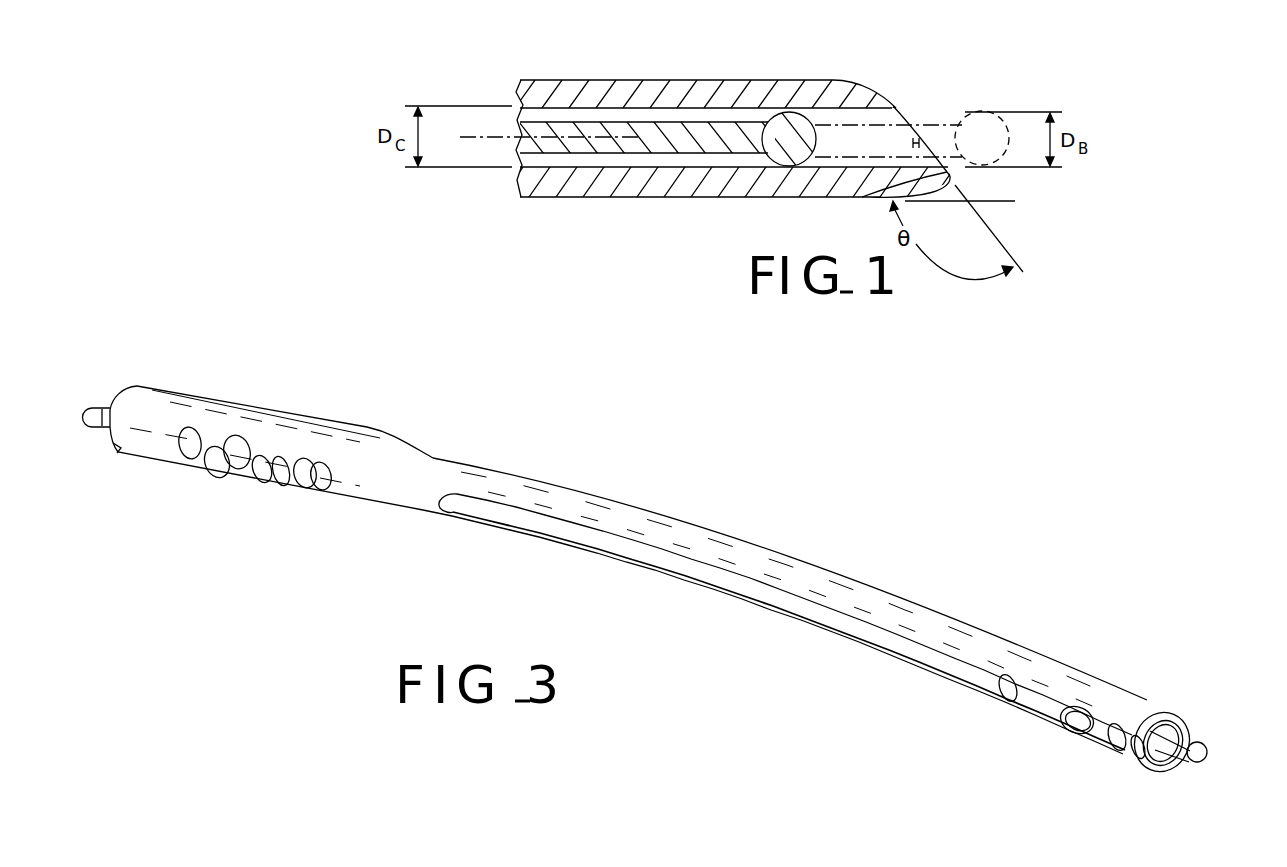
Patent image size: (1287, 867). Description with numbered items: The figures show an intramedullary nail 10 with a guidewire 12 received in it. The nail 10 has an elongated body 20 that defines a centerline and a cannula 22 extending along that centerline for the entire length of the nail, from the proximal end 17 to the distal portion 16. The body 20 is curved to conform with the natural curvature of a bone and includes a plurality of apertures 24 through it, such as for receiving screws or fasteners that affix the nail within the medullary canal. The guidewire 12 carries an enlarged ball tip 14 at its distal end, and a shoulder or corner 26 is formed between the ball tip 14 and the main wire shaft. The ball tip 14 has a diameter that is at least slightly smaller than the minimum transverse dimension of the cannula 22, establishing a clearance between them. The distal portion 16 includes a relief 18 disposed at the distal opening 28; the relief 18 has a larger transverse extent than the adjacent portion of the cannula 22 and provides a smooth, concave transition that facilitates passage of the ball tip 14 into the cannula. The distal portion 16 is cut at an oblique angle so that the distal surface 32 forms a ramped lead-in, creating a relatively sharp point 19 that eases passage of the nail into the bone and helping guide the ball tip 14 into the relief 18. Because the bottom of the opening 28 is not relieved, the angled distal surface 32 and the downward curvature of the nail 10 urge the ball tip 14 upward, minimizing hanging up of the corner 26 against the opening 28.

In FIG. 3, the intramedullary nail 10 is at (774, 519).
In FIG. 1, the guidewire 12 is at (620, 122).
In FIG. 3, the guidewire 12 is at (102, 410).
In FIG. 1, the ball tip 14 is at (762, 124).
In FIG. 3, the ball tip 14 is at (1208, 750).
In FIG. 1, the distal portion 16 is at (763, 72).
In FIG. 3, the distal portion 16 is at (1149, 698).
In FIG. 3, the proximal end 17 is at (157, 470).
In FIG. 1, the relief 18 is at (936, 165).
In FIG. 3, the relief 18 is at (1150, 764).
In FIG. 1, the point 19 is at (893, 180).
In FIG. 1, the elongated body 20 is at (572, 188).
In FIG. 3, the elongated body 20 is at (620, 508).
In FIG. 1, the cannula 22 is at (696, 164).
In FIG. 3, the apertures 24 is at (317, 479).
In FIG. 1, the shoulder or corner 26 is at (760, 120).
In FIG. 1, the distal opening 28 is at (912, 110).
In FIG. 1, the distal surface 32 is at (955, 172).